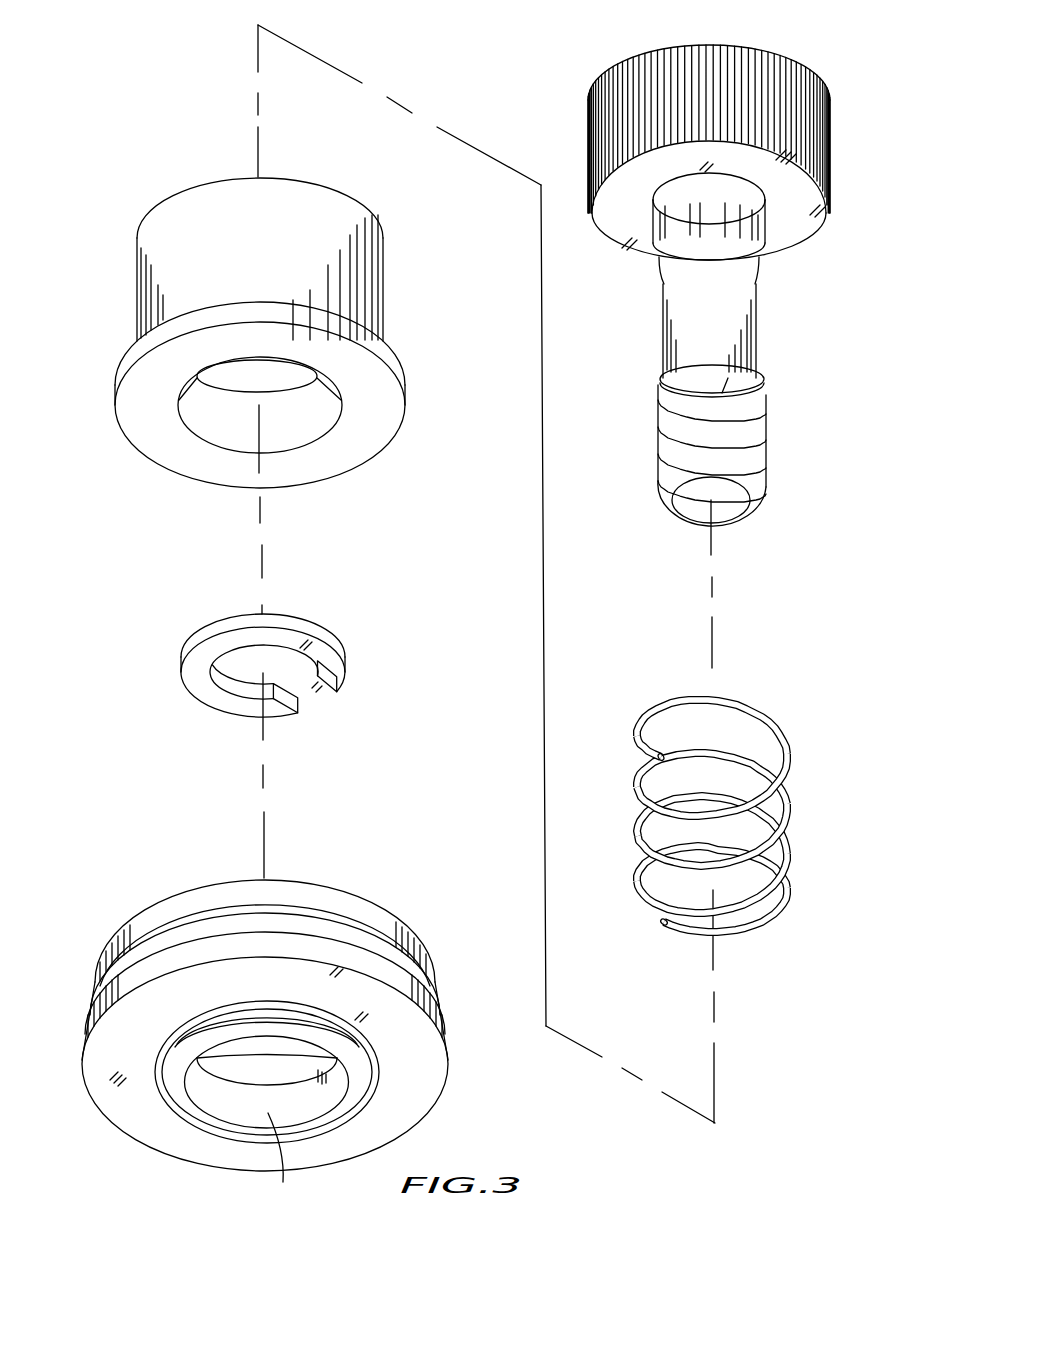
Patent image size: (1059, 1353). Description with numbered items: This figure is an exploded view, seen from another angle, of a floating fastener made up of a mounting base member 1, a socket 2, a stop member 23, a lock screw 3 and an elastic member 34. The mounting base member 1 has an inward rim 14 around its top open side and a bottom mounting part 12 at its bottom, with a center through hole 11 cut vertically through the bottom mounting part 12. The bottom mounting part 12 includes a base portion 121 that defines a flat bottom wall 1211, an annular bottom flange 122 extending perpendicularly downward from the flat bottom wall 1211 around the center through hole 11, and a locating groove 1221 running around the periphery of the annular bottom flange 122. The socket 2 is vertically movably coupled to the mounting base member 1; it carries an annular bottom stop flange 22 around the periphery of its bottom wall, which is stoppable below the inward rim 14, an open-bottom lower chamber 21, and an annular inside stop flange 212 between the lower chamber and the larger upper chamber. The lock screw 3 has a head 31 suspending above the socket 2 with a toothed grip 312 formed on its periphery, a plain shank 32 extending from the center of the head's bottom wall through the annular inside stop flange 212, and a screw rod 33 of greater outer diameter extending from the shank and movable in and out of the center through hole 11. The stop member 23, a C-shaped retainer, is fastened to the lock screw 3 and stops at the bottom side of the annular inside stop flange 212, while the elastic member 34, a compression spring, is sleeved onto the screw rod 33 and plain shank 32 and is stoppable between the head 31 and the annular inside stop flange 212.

The mounting base member 1 is at (324, 1020).
The center through hole 11 is at (284, 1160).
The bottom mounting part 12 is at (360, 1072).
The base portion 121 is at (440, 1027).
The flat bottom wall 1211 is at (412, 1037).
The locating groove 1221 is at (367, 1062).
The annular bottom flange 122 is at (358, 1078).
The inward rim 14 is at (300, 878).
The socket 2 is at (281, 352).
The open-bottom lower chamber 21 is at (240, 430).
The annular inside stop flange 212 is at (268, 362).
The annular bottom stop flange 22 is at (388, 418).
The stop member 23 is at (327, 653).
The lock screw 3 is at (674, 273).
The head 31 is at (674, 152).
The toothed grip 312 is at (600, 130).
The plain shank 32 is at (678, 357).
The screw rod 33 is at (676, 440).
The elastic member 34 is at (642, 735).